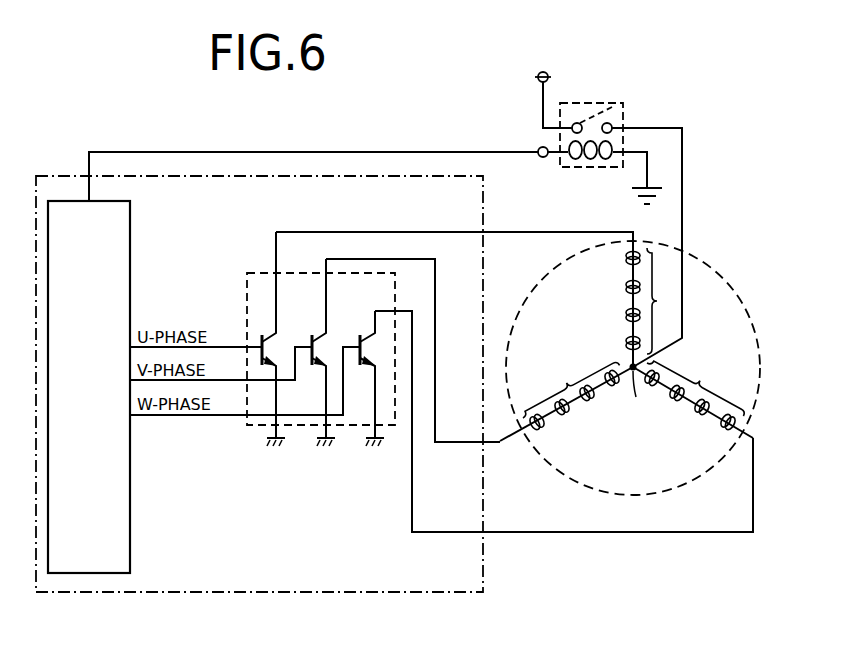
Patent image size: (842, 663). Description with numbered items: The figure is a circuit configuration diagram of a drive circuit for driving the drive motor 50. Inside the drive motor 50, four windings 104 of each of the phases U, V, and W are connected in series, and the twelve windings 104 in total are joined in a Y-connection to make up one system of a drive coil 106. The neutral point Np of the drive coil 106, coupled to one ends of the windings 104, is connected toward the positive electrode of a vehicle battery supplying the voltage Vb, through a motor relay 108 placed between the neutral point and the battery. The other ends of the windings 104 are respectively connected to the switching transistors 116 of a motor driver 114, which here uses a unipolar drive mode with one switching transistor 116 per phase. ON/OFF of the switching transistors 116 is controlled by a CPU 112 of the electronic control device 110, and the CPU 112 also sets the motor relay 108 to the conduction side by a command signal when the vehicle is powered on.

The drive motor 50 is at (652, 343).
The windings 104 is at (625, 258).
The drive coil 106 is at (727, 278).
The motor relay 108 is at (583, 100).
The electronic control device 110 is at (237, 592).
The CPU 112 is at (130, 510).
The motor driver 114 is at (266, 272).
The switching transistor 116 is at (259, 337).